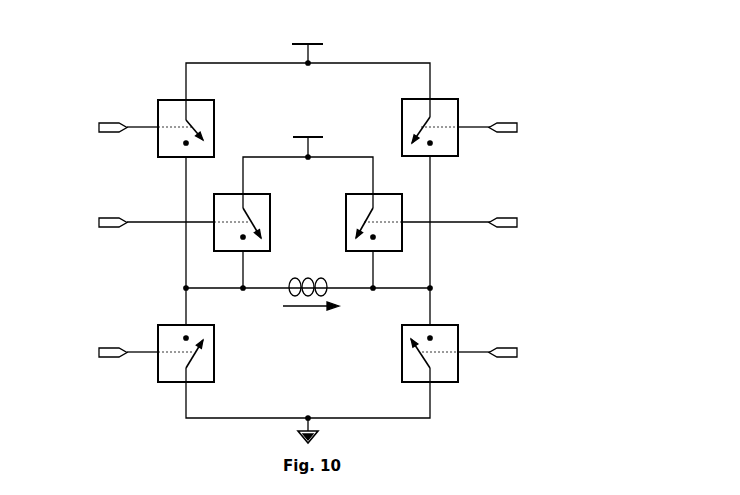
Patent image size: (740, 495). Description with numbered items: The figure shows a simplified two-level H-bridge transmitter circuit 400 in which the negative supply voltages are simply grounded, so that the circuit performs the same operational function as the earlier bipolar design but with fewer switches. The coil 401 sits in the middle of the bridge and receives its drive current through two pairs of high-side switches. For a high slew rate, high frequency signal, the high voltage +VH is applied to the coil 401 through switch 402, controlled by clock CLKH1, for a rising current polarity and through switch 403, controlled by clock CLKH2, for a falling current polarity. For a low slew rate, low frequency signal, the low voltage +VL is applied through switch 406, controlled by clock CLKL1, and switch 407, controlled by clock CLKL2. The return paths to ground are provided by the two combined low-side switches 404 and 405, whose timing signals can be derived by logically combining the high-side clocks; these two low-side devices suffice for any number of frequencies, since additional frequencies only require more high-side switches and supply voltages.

The simplified circuit 400 is at (402, 47).
The coil 401 is at (318, 275).
The high-side switch 402 is at (214, 120).
The high-side switch 403 is at (402, 119).
The low-side switch 404 is at (214, 368).
The low-side switch 405 is at (402, 368).
The high-side switch 406 is at (271, 210).
The high-side switch 407 is at (346, 210).